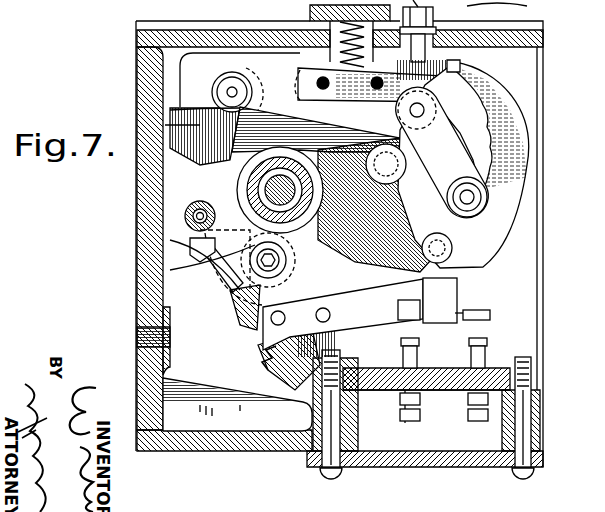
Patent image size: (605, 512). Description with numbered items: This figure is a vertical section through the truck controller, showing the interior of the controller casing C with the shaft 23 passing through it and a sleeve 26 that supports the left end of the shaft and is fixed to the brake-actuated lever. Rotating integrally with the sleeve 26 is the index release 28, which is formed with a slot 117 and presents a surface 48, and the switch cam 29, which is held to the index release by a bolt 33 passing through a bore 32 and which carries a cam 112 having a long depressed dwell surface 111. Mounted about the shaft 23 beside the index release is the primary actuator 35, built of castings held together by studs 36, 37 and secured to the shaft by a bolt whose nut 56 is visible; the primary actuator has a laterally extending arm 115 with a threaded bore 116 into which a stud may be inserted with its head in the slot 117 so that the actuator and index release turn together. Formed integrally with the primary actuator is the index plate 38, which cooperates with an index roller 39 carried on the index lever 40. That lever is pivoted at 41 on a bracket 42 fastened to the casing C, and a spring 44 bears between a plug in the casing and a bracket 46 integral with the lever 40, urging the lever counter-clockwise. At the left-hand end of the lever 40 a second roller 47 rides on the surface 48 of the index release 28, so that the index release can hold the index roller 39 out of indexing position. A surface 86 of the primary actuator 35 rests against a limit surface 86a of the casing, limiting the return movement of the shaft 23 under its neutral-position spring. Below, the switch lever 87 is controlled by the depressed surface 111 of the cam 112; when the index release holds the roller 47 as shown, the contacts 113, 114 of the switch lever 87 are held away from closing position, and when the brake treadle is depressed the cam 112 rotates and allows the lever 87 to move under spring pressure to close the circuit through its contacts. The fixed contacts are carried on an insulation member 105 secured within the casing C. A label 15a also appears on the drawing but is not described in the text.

The controller casing C is at (243, 454).
The cover 15a is at (338, 4).
The spring 44 is at (300, 32).
The pivot 41 is at (424, 108).
The index release 28 is at (270, 120).
The second roller 47 is at (235, 109).
The surface of the index release 48 is at (265, 104).
The bracket 46 is at (325, 80).
The sleeve 26 is at (242, 172).
The shaft 23 is at (248, 187).
The laterally extending arm 115 is at (184, 210).
The threaded bore 116 is at (192, 217).
The slot 117 is at (193, 242).
The cam 112 is at (183, 255).
The switch cam 29 is at (200, 270).
The bolt 33 is at (245, 245).
The bore 32 is at (240, 290).
The depressed surface 111 is at (262, 272).
The nut 56 is at (342, 285).
The switch lever 87 is at (460, 290).
The index plate 38 is at (507, 117).
The index lever 40 is at (463, 104).
The bracket 42 is at (452, 70).
The index roller 39 is at (485, 190).
The stud 36 is at (424, 118).
The primary actuator 35 is at (372, 122).
The stud 37 is at (453, 245).
The surface of the primary actuator 86 is at (172, 102).
The limit surface 86a is at (167, 125).
The contact 113 is at (443, 361).
The contact 114 is at (478, 320).
The insulation member 105 is at (436, 395).